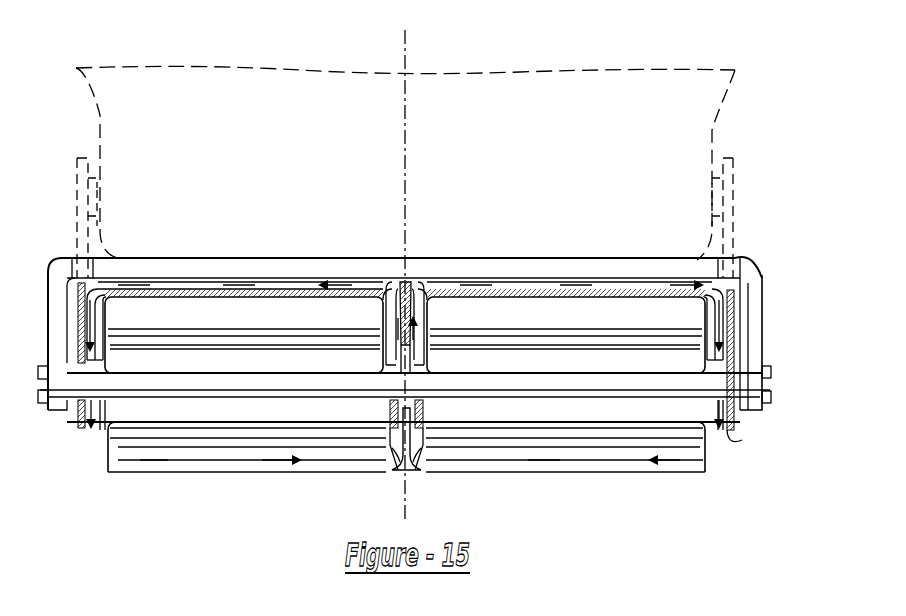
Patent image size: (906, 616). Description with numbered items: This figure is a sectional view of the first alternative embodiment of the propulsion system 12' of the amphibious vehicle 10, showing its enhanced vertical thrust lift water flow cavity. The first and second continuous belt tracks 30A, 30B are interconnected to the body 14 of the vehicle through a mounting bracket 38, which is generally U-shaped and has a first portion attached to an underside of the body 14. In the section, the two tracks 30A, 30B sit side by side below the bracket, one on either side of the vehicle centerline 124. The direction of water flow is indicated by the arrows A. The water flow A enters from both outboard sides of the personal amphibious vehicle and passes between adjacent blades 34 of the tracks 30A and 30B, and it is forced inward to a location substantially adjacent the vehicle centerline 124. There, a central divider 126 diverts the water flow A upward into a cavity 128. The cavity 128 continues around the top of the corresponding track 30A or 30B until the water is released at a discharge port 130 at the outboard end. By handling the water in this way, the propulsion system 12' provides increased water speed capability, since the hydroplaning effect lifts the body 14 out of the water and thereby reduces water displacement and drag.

The amphibious vehicle 10 is at (758, 99).
The propulsion system 12' is at (65, 193).
The body 14 is at (712, 137).
The first continuous belt track 30A is at (335, 480).
The second continuous belt track 30B is at (700, 476).
The blades 34 is at (118, 446).
The mounting bracket 38 is at (513, 262).
The vehicle centerline 124 is at (405, 60).
The central divider 126 is at (414, 476).
The cavity 128 is at (758, 265).
The discharge port 130 is at (728, 440).
The water flow A is at (133, 460).